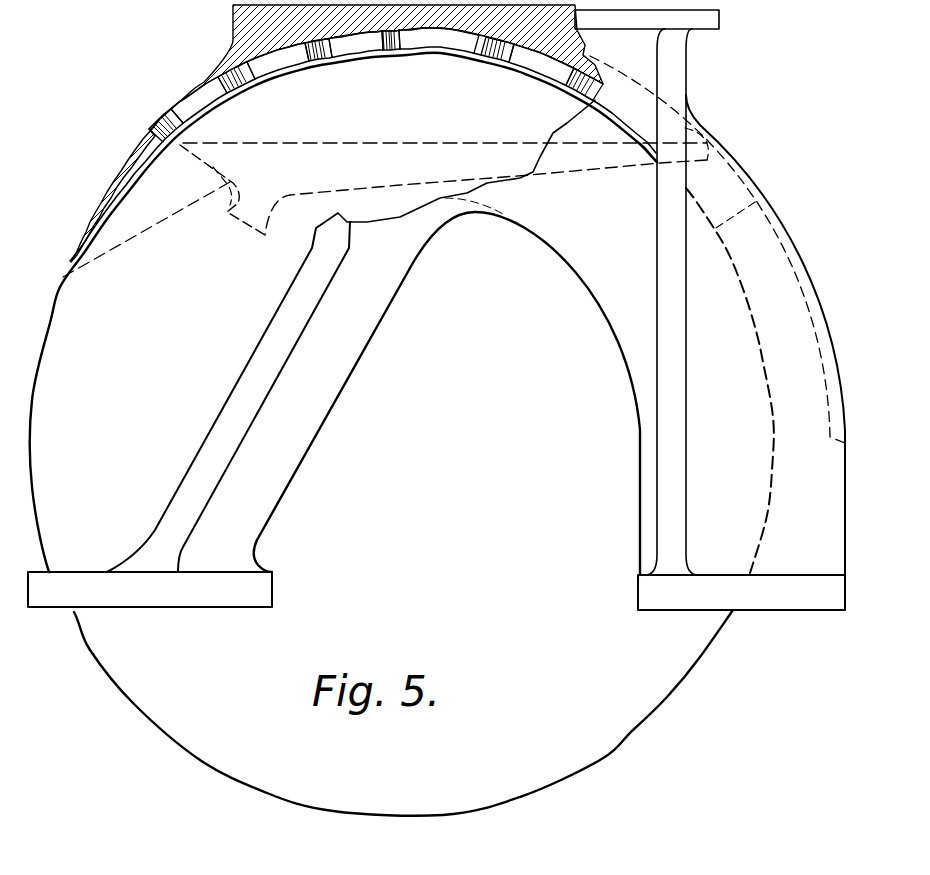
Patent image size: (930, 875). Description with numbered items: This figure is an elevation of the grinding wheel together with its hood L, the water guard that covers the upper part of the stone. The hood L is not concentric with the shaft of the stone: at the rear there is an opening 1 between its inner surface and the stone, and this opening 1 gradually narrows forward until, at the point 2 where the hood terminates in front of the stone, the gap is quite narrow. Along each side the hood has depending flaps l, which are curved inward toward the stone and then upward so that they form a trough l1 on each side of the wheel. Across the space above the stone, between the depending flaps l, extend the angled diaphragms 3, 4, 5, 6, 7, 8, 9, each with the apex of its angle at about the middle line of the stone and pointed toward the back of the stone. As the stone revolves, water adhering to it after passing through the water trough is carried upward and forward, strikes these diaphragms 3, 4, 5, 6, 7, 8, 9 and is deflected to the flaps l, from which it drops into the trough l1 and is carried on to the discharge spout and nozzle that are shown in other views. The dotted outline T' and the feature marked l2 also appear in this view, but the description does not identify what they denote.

The opening 1 is at (730, 380).
The point where the hood terminates 2 is at (321, 159).
The angled diaphragm 3 is at (663, 101).
The angled diaphragm 4 is at (541, 64).
The angled diaphragm 5 is at (439, 41).
The angled diaphragm 6 is at (356, 44).
The angled diaphragm 7 is at (278, 61).
The angled diaphragm 8 is at (199, 100).
The angled diaphragm 9 is at (168, 140).
The hood L is at (765, 352).
The dotted outline of flange T' is at (717, 245).
The depending flaps l is at (445, 123).
The trough l1 is at (486, 192).
The groove notch l2 is at (252, 230).